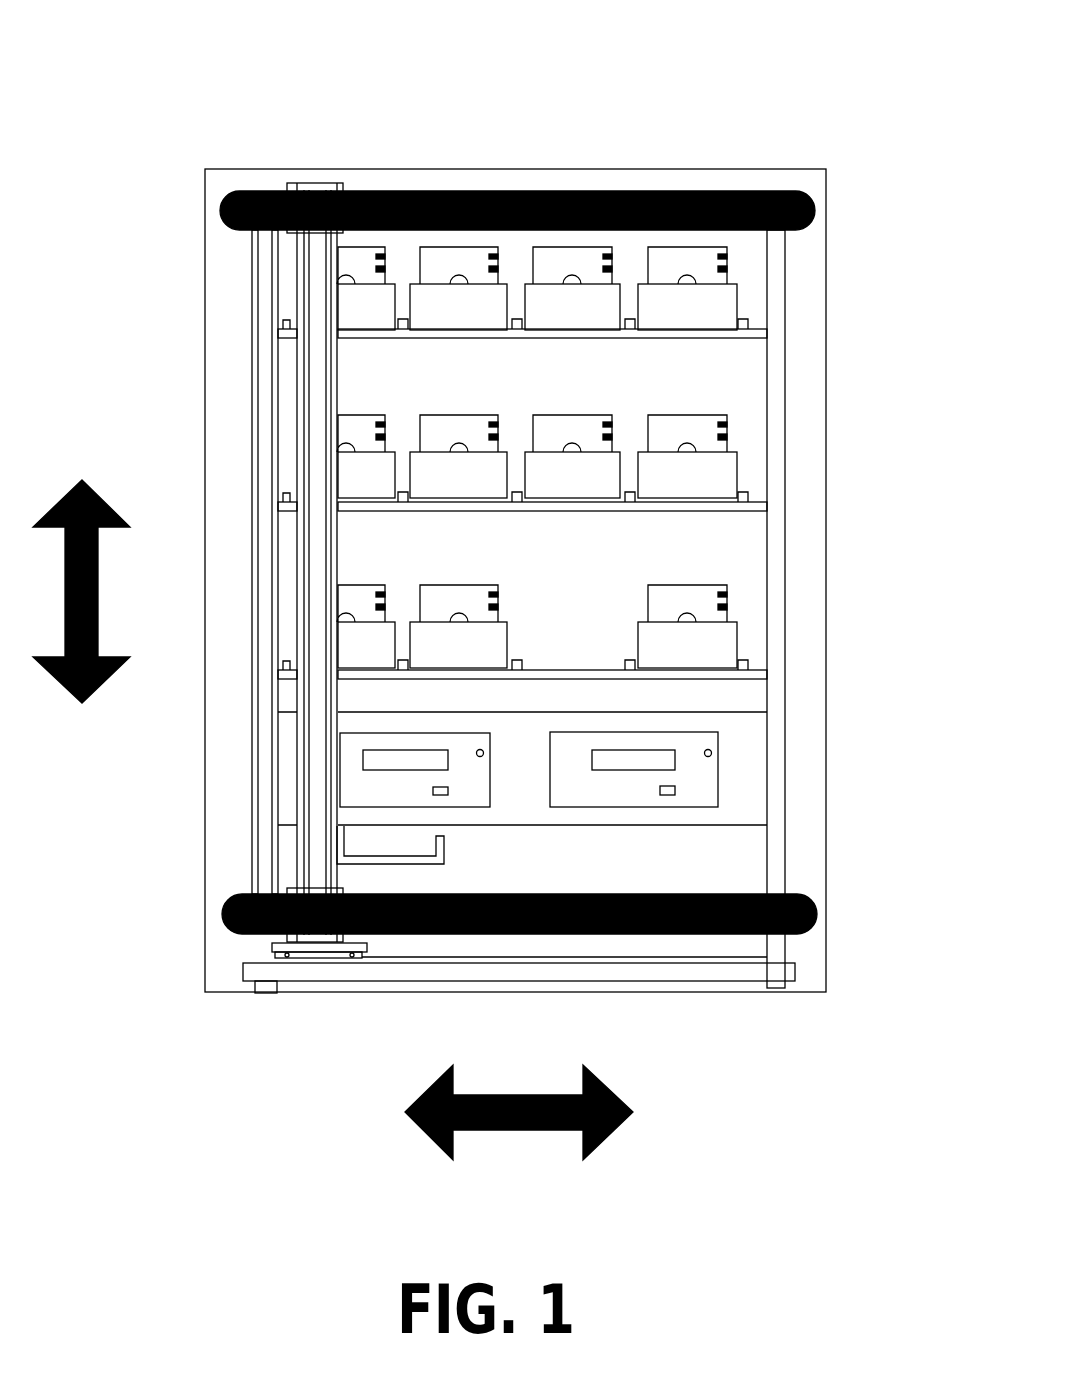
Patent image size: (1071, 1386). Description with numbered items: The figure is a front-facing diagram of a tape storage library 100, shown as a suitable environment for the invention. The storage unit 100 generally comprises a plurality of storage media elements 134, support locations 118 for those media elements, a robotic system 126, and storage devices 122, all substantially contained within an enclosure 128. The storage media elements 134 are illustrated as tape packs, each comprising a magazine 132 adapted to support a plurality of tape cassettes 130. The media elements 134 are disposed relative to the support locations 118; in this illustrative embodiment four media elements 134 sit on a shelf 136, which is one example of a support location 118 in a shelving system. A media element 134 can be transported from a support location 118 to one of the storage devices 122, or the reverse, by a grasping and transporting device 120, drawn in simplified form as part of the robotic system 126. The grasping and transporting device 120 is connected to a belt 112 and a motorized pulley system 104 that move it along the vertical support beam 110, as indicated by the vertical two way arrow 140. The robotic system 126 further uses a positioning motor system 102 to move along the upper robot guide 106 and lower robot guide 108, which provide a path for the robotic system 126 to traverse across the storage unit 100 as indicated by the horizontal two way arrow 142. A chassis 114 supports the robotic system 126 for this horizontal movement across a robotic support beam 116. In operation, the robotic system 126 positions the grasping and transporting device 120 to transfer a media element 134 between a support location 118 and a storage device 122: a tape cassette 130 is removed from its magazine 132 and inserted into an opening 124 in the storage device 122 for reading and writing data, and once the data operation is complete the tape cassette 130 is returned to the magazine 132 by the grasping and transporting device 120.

The tape storage library 100 is at (474, 609).
The positioning motor system 102 is at (297, 183).
The motorized pulley system 104 is at (318, 200).
The upper robot guide 106 is at (557, 192).
The lower robot guide 108 is at (555, 935).
The vertical support beam 110 is at (292, 425).
The belt 112 is at (310, 585).
The chassis 114 is at (315, 958).
The robotic support beam 116 is at (455, 982).
The support location 118 is at (563, 632).
The grasping and transporting device 120 is at (442, 836).
The storage device 122 is at (718, 773).
The opening 124 is at (612, 771).
The robotic system 126 is at (300, 755).
The enclosure 128 is at (712, 168).
The tape cassette 130 is at (682, 412).
The magazine 132 is at (737, 470).
The storage media element 134 is at (745, 644).
The shelf 136 is at (730, 679).
The vertical two way arrow 140 is at (98, 618).
The horizontal two way arrow 142 is at (508, 1130).